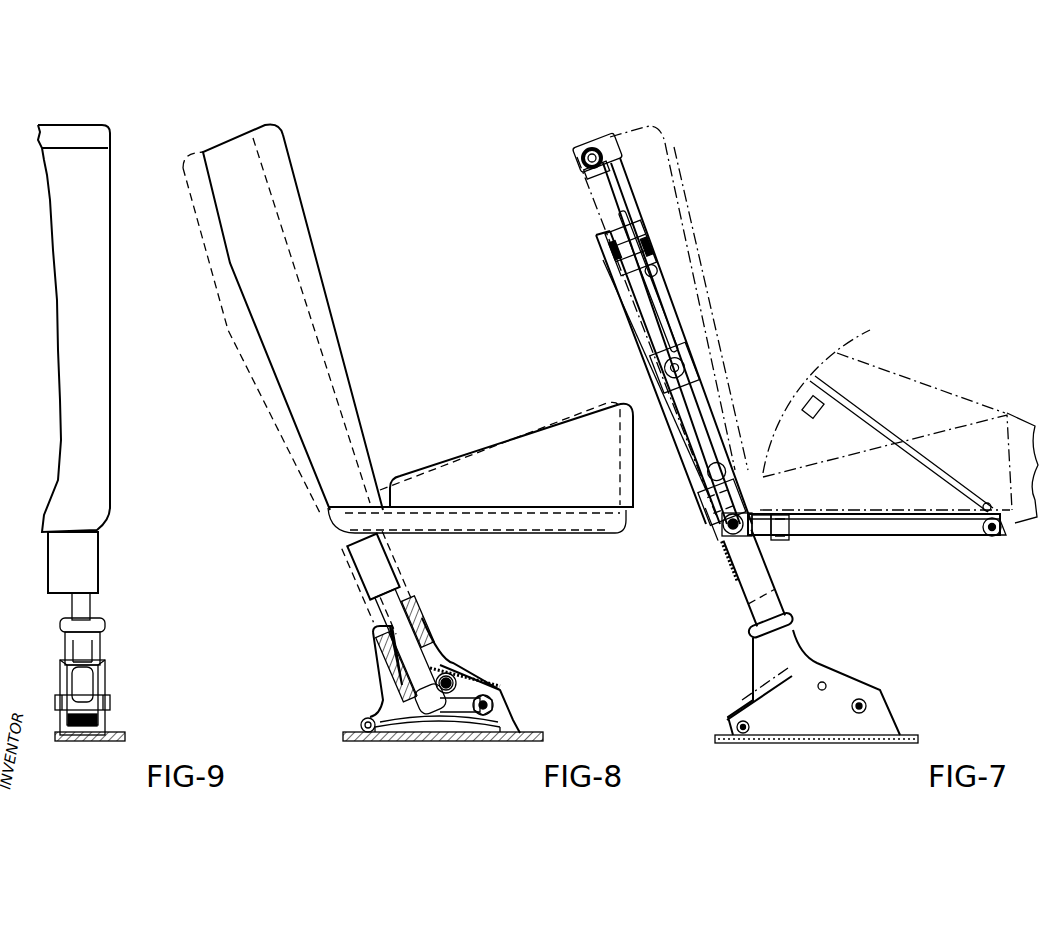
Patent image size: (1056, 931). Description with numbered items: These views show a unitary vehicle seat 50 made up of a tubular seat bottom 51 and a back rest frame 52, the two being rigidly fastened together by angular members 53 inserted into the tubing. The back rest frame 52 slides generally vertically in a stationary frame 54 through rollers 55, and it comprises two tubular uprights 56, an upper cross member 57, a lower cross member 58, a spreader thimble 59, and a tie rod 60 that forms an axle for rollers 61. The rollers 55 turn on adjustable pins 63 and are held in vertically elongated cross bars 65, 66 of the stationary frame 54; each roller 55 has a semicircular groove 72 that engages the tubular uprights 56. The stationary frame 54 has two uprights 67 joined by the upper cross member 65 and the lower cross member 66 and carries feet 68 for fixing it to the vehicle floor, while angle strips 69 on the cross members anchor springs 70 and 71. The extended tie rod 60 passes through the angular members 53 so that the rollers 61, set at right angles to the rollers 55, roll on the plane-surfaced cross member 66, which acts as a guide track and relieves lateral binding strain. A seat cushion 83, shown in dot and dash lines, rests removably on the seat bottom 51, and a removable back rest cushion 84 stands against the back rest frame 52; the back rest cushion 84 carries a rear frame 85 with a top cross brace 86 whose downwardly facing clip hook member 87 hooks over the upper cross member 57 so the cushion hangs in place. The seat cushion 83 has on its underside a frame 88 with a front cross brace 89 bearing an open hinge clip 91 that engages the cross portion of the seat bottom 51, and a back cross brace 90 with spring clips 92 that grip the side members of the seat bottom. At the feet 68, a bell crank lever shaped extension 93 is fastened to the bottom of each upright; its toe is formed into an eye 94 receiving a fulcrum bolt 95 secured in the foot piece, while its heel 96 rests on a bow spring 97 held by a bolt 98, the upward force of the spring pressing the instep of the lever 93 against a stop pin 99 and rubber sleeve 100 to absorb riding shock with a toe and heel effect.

In FIG. 9, the unitary vehicle seat 50 is at (122, 432).
In FIG. 8, the unitary vehicle seat 50 is at (523, 560).
In FIG. 7, the unitary vehicle seat 50 is at (865, 573).
In FIG. 7, the tubular seat bottom 51 is at (910, 525).
In FIG. 7, the back rest frame 52 is at (586, 228).
In FIG. 7, the angular members 53 is at (722, 495).
In FIG. 7, the stationary frame 54 is at (737, 621).
In FIG. 7, the rollers 55 is at (634, 233).
In FIG. 7, the tubular uprights 56 is at (612, 207).
In FIG. 7, the upper cross member 57 is at (582, 153).
In FIG. 7, the lower cross member 58 is at (660, 369).
In FIG. 7, the spreader thimble 59 is at (721, 525).
In FIG. 7, the tie rod 60 is at (721, 533).
In FIG. 7, the rollers 61 is at (770, 540).
In FIG. 7, the adjustable pins 63 is at (621, 263).
In FIG. 7, the upper vertically elongated cross member 65 is at (614, 252).
In FIG. 9, the lower vertically elongated cross member 66 is at (97, 552).
In FIG. 8, the lower vertically elongated cross member 66 is at (363, 550).
In FIG. 7, the lower vertically elongated cross member 66 is at (736, 555).
In FIG. 9, the uprights 67 is at (92, 605).
In FIG. 8, the uprights 67 is at (407, 607).
In FIG. 7, the uprights 67 is at (781, 598).
In FIG. 9, the feet 68 is at (120, 733).
In FIG. 8, the feet 68 is at (500, 743).
In FIG. 7, the feet 68 is at (808, 725).
In FIG. 7, the angle strips 69 is at (650, 270).
In FIG. 7, the spring 70 is at (622, 297).
In FIG. 7, the spring 71 is at (690, 462).
In FIG. 7, the semicircular groove 72 is at (614, 237).
In FIG. 8, the seat cushion 83 is at (460, 467).
In FIG. 7, the seat cushion 83 is at (992, 430).
In FIG. 8, the back rest cushion 84 is at (313, 265).
In FIG. 7, the back rest cushion 84 is at (690, 257).
In FIG. 7, the frame 85 is at (728, 400).
In FIG. 7, the top cross brace 86 is at (613, 147).
In FIG. 7, the clip hook member 87 is at (588, 172).
In FIG. 7, the frame 88 is at (830, 510).
In FIG. 7, the front cross brace 89 is at (989, 504).
In FIG. 7, the back cross brace 90 is at (778, 514).
In FIG. 7, the open hinge clip 91 is at (995, 538).
In FIG. 7, the spring clips 92 is at (782, 540).
In FIG. 9, the bell crank lever shaped extension 93 is at (78, 705).
In FIG. 8, the bell crank lever shaped extension 93 is at (460, 703).
In FIG. 7, the bell crank lever shaped extension 93 is at (813, 682).
In FIG. 8, the eye 94 is at (492, 700).
In FIG. 9, the fulcrum pin or bolt 95 is at (100, 705).
In FIG. 8, the fulcrum pin or bolt 95 is at (494, 705).
In FIG. 7, the fulcrum pin or bolt 95 is at (867, 705).
In FIG. 8, the heel 96 is at (393, 740).
In FIG. 9, the bow spring 97 is at (78, 735).
In FIG. 8, the bow spring 97 is at (437, 728).
In FIG. 8, the bolt 98 is at (362, 722).
In FIG. 7, the bolt 98 is at (742, 733).
In FIG. 8, the stop pin 99 is at (448, 678).
In FIG. 7, the stop pin 99 is at (825, 683).
In FIG. 8, the rubber sleeve 100 is at (446, 672).